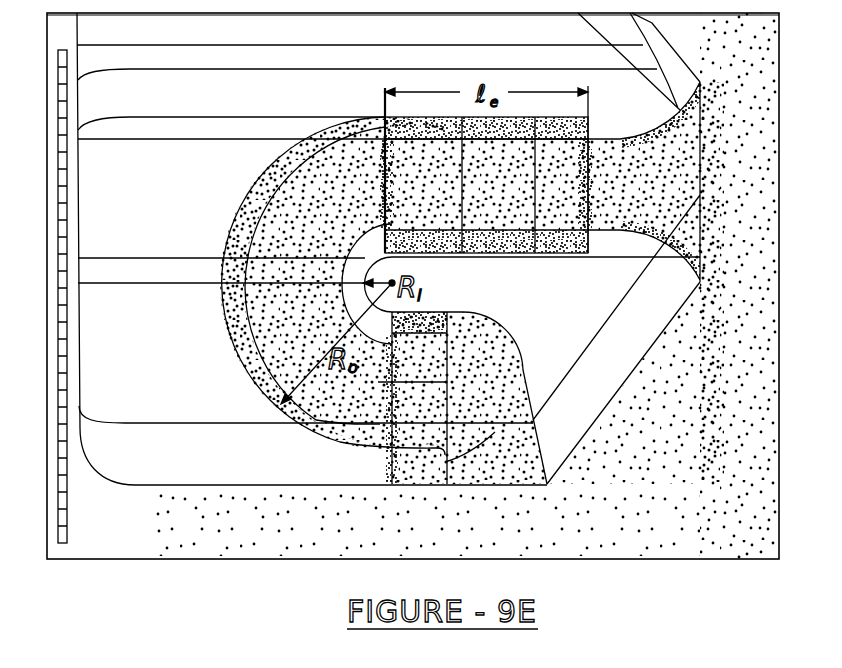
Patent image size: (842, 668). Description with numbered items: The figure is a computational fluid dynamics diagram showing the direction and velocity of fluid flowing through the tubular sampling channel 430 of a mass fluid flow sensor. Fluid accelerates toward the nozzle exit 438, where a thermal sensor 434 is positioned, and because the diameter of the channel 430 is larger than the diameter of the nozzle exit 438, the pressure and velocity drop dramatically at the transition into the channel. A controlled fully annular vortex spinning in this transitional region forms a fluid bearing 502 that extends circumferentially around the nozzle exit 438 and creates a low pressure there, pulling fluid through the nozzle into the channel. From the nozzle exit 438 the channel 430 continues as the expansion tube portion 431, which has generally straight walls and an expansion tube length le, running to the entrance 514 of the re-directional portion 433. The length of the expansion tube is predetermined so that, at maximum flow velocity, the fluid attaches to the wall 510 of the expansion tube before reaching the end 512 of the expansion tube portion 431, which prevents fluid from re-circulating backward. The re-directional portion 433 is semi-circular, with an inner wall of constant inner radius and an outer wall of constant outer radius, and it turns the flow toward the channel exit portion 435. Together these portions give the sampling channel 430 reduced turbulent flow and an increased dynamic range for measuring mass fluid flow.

The channel 430 is at (238, 212).
The expansion tube portion 431 is at (466, 225).
The re-directional portion 433 is at (248, 302).
The thermal sensor 434 is at (580, 245).
The channel exit portion 435 is at (445, 458).
The nozzle exit 438 is at (590, 178).
The fluid bearing 502 is at (557, 117).
The wall 510 is at (418, 252).
The end 512 is at (384, 116).
The entrance 514 is at (278, 159).